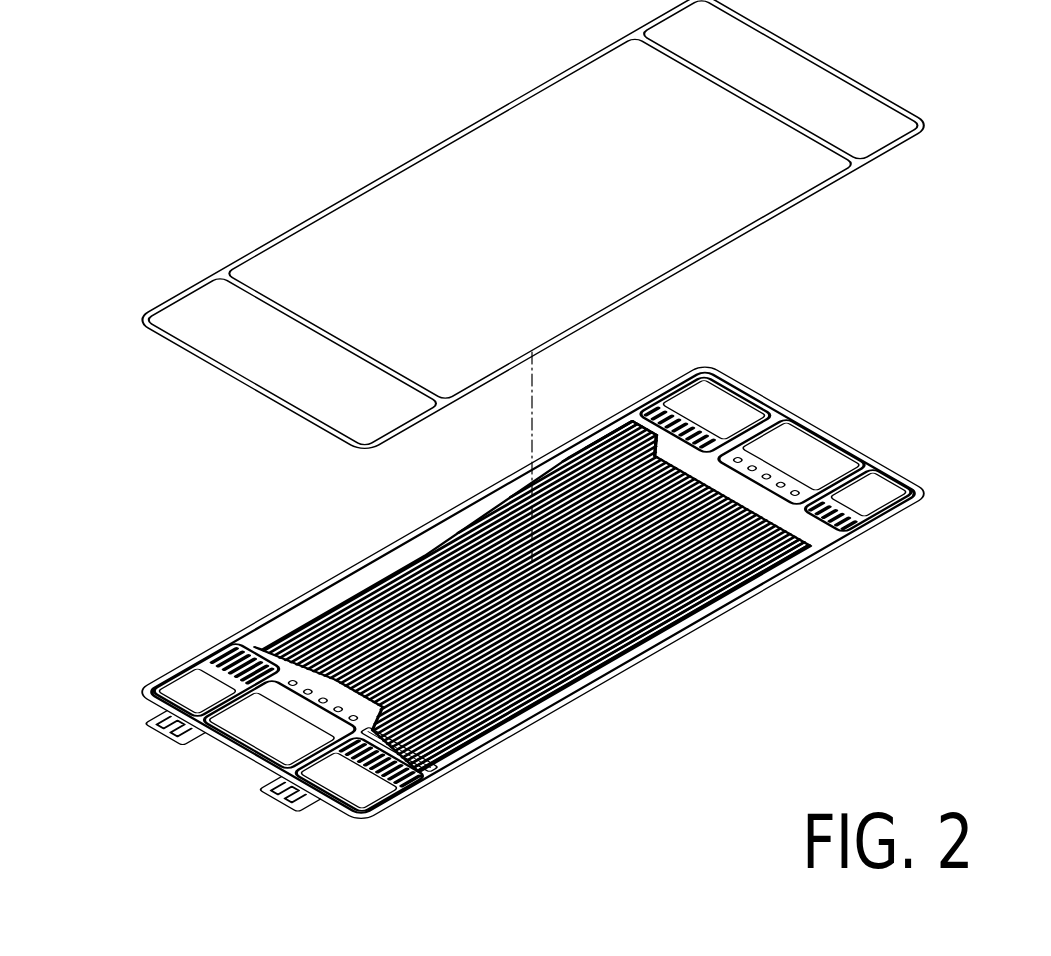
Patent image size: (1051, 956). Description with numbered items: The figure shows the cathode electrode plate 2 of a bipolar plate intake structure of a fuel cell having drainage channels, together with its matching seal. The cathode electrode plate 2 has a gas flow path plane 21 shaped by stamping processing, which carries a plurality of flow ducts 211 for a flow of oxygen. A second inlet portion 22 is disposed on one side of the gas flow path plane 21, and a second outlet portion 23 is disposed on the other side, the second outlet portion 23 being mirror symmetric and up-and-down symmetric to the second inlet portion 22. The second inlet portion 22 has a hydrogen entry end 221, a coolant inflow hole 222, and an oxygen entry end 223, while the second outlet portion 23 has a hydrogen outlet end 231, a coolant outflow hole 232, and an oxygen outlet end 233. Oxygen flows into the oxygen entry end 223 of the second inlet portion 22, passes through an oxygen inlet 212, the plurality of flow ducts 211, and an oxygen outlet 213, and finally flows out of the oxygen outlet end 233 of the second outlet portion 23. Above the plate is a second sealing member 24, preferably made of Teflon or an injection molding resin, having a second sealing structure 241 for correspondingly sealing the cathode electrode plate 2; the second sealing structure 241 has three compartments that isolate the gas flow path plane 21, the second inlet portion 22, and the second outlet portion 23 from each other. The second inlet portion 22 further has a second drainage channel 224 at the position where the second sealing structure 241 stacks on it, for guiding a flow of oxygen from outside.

The cathode electrode plate 2 is at (537, 583).
The gas flow path plane 21 is at (528, 598).
The flow ducts 211 is at (608, 656).
The oxygen inlet 212 is at (629, 446).
The oxygen outlet 213 is at (399, 749).
The second inlet portion 22 is at (775, 453).
The hydrogen entry end 221 is at (858, 500).
The coolant inflow hole 222 is at (791, 462).
The oxygen entry end 223 is at (705, 415).
The second drainage channel 224 is at (833, 516).
The second outlet portion 23 is at (299, 727).
The hydrogen outlet end 231 is at (217, 680).
The coolant outflow hole 232 is at (280, 724).
The oxygen outlet end 233 is at (359, 774).
The second sealing member 24 is at (533, 226).
The second sealing structure 241 is at (780, 80).